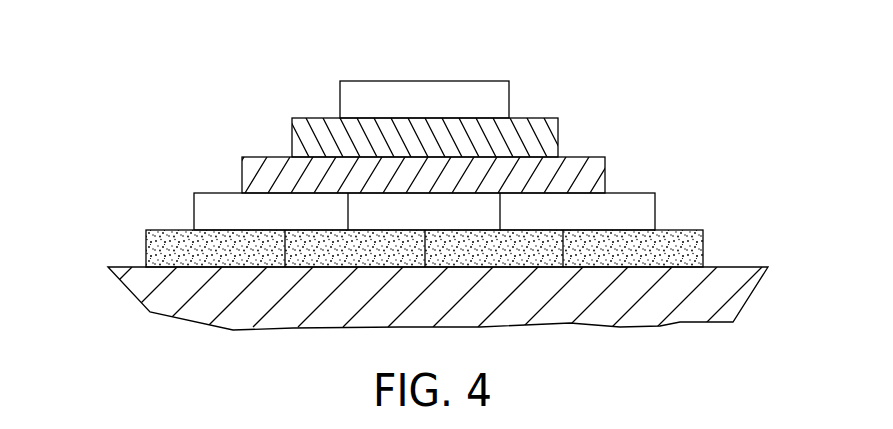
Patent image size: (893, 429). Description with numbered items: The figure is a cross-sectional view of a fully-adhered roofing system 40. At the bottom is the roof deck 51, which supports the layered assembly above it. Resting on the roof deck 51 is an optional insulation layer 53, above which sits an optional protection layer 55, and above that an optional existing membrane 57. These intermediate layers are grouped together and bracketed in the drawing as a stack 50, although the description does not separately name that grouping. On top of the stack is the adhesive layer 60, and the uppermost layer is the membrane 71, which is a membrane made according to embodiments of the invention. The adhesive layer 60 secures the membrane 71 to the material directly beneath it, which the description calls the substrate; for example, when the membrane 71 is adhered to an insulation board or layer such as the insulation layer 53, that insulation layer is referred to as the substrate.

The roofing system 40 is at (192, 86).
The layer stack 50 is at (407, 206).
The roof deck 51 is at (141, 293).
The insulation layer 53 is at (145, 236).
The protection layer 55 is at (194, 200).
The existing membrane 57 is at (242, 178).
The adhesive layer 60 is at (558, 138).
The membrane 71 is at (470, 81).